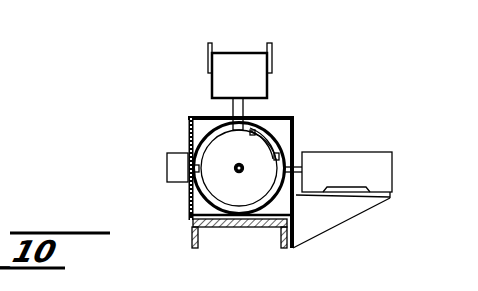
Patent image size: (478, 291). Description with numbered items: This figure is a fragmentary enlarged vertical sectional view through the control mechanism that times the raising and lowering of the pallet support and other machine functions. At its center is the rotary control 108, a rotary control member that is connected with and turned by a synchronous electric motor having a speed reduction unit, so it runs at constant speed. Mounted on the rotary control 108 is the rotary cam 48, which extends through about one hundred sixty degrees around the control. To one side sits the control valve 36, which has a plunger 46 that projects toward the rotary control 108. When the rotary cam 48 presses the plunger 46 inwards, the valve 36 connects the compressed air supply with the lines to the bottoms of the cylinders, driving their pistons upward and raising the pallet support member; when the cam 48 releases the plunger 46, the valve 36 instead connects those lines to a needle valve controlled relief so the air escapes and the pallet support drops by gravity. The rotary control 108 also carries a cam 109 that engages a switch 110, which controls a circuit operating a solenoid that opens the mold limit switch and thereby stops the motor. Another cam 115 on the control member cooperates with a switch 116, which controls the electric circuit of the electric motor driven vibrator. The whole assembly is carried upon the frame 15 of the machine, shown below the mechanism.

The frame 15 is at (228, 228).
The control valve 36 is at (360, 160).
The plunger 46 is at (302, 170).
The rotary cam 48 is at (212, 140).
The rotary control 108 is at (205, 192).
The cam 109 is at (272, 114).
The switch 110 is at (176, 168).
The cam 115 is at (279, 150).
The switch 116 is at (231, 65).